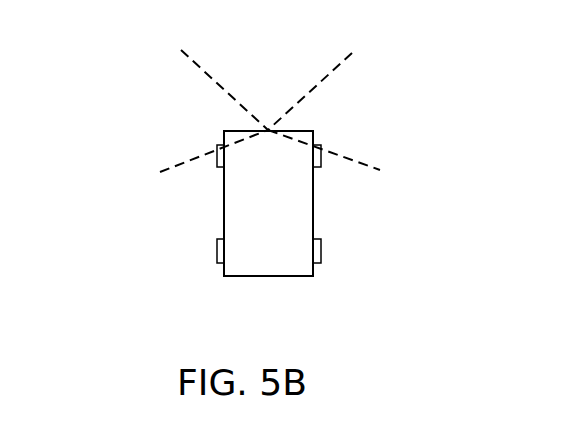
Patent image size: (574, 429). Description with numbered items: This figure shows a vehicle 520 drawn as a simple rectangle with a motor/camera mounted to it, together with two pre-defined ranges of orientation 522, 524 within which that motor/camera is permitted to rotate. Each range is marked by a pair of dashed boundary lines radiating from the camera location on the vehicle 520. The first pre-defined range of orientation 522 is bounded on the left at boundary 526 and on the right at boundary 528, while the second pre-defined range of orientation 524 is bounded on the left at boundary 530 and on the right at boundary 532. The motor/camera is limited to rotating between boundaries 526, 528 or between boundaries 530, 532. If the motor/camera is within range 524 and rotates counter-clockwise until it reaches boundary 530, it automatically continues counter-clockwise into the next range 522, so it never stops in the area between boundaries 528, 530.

The vehicle 520 is at (269, 203).
The pre-defined range of orientation 522 is at (148, 112).
The pre-defined range of orientation 524 is at (378, 105).
The boundary 526 is at (160, 173).
The boundary 528 is at (189, 62).
The boundary 530 is at (356, 56).
The boundary 532 is at (378, 169).